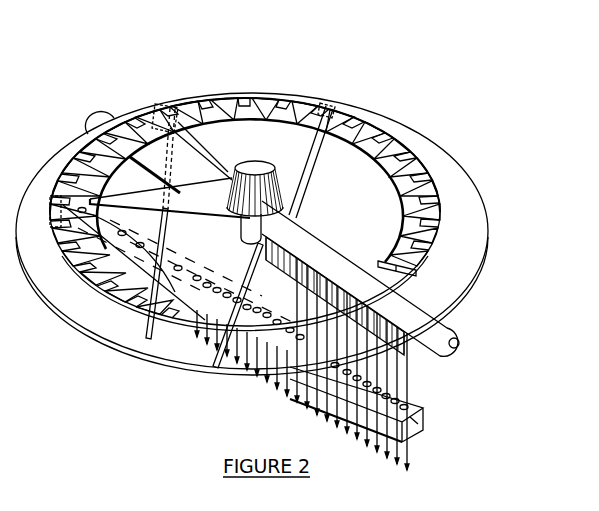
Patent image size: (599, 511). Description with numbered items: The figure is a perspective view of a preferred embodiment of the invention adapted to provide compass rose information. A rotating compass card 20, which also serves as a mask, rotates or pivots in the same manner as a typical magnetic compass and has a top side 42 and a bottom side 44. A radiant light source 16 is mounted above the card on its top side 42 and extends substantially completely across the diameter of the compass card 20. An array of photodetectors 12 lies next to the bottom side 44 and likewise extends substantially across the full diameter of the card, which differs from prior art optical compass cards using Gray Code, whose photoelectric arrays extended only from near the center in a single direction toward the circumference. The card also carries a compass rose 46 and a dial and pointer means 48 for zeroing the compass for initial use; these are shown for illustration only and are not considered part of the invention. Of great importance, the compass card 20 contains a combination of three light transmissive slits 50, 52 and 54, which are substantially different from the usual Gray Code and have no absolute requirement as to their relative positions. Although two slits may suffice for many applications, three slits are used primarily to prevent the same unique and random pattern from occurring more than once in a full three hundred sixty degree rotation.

The array of photodetectors 12 is at (430, 418).
The light source 16 is at (452, 325).
The compass card 20 is at (455, 183).
The top side 42 is at (463, 248).
The bottom side 44 is at (408, 347).
The compass rose 46 is at (258, 96).
The dial and pointer means 48 is at (327, 100).
The light transmissive slit 50 is at (143, 327).
The light transmissive slit 52 is at (187, 360).
The light transmissive slit 54 is at (173, 103).